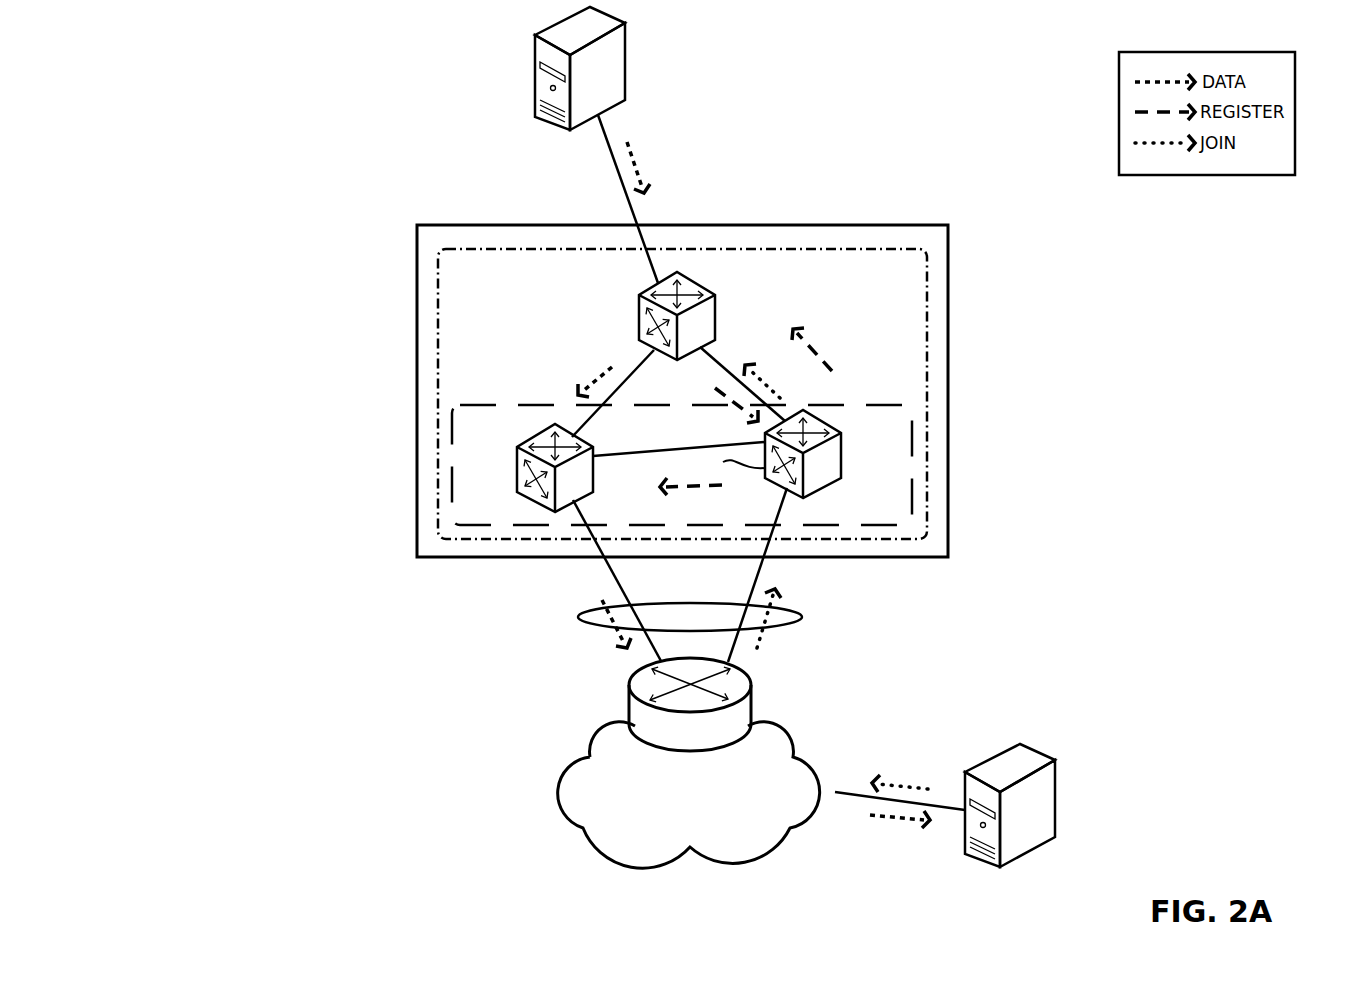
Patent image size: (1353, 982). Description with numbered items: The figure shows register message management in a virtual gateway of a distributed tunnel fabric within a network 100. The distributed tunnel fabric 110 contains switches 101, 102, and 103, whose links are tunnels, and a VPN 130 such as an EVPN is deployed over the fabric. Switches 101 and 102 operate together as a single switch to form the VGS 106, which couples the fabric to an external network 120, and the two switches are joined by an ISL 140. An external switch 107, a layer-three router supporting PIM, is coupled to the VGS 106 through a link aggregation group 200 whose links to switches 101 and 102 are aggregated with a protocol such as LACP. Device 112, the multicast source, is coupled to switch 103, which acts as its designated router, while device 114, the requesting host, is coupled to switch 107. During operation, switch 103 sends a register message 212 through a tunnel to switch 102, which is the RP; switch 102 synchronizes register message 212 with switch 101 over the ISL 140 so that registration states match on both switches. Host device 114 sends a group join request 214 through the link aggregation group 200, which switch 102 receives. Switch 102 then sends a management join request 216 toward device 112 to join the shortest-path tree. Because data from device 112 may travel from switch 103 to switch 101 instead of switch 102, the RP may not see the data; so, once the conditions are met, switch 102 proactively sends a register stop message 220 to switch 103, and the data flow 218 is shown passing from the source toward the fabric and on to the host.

The network 100 is at (284, 127).
The distributed tunnel fabric 110 is at (867, 226).
The VPN 130 is at (927, 273).
The VGS 106 is at (893, 525).
The switch 101 is at (516, 470).
The switch 102 is at (841, 452).
The switch 103 is at (640, 317).
The ISL 140 is at (679, 455).
The external switch 107 is at (750, 718).
The external network 120 is at (677, 815).
The device 112 is at (510, 90).
The device 114 is at (1040, 892).
The link aggregation group 200 is at (578, 617).
The register message 212 is at (722, 394).
The group join request 214 is at (906, 785).
The management join request 216 is at (768, 385).
The data flow from source 218 is at (632, 152).
The register stop message 220 is at (823, 362).